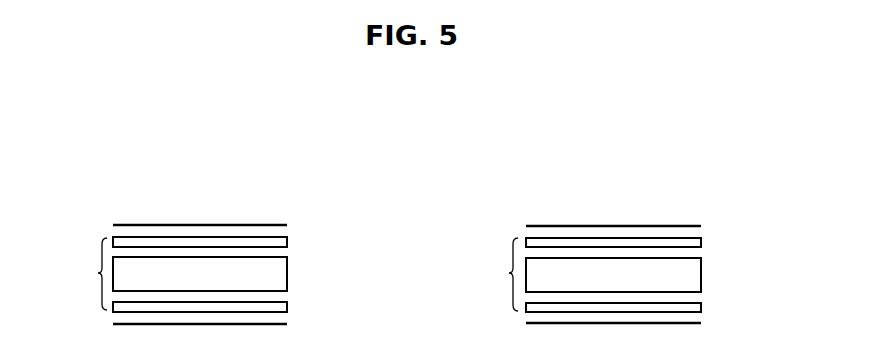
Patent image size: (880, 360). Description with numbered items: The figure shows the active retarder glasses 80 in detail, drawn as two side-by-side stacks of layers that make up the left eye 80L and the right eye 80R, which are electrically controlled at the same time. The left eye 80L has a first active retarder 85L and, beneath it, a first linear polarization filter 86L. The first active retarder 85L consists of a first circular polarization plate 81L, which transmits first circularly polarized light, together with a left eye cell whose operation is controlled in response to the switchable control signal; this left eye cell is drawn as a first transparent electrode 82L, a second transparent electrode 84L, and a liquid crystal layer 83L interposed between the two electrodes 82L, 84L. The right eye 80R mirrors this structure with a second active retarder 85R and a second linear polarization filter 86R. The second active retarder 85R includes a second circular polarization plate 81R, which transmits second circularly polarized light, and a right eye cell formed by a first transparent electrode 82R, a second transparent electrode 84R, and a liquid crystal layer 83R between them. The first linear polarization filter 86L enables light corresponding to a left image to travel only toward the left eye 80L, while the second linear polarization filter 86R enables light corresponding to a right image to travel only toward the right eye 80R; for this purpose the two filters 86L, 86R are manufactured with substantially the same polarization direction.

The active retarder glasses 80 is at (123, 128).
The left eye 80L is at (193, 215).
The right eye 80R is at (607, 215).
The first circular polarization plate 81L is at (289, 225).
The first transparent electrode 82L is at (288, 242).
The liquid crystal layer 83L is at (288, 271).
The second transparent electrode 84L is at (288, 307).
The first active retarder 85L is at (362, 222).
The first linear polarization filter 86L is at (289, 324).
The second circular polarization plate 81R is at (703, 226).
The first transparent electrode 82R is at (702, 242).
The liquid crystal layer 83R is at (702, 271).
The second transparent electrode 84R is at (702, 307).
The second active retarder 85R is at (775, 222).
The second linear polarization filter 86R is at (703, 323).